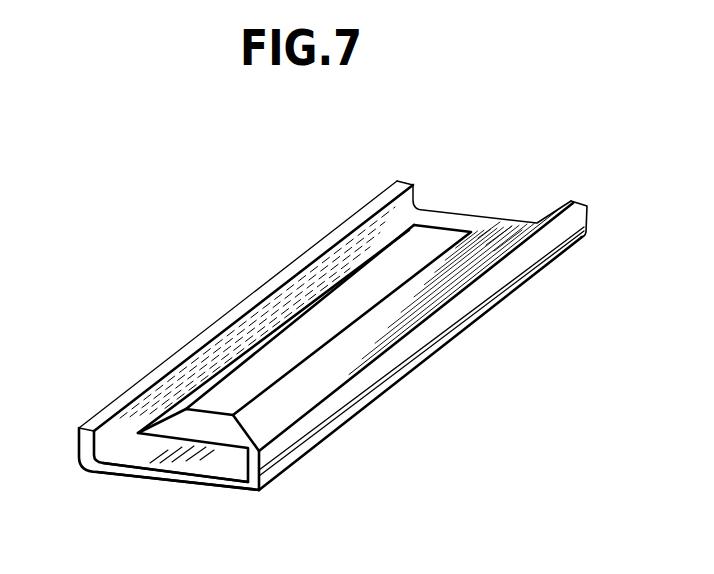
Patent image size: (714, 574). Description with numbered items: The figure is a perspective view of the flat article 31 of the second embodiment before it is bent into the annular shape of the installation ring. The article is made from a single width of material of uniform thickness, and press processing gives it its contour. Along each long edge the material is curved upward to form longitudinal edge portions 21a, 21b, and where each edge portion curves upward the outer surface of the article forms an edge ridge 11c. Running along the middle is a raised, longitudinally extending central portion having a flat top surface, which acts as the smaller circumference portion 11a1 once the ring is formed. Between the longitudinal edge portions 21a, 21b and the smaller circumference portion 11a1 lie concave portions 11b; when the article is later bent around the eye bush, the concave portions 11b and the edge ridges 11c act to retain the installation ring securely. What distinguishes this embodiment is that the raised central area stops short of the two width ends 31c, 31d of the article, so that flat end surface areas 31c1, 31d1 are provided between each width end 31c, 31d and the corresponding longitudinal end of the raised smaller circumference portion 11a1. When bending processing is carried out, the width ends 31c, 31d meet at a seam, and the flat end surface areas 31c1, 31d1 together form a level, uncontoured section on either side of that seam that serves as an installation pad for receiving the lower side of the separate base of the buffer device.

The installation ring 31 is at (545, 327).
The width end 31c is at (128, 472).
The flat end surface area 31c1 is at (218, 463).
The width end 31d is at (452, 212).
The flat end surface area 31d1 is at (512, 231).
The smaller circumference portion 11a1 is at (262, 370).
The concave portion 11b is at (168, 388).
The edge ridge 11c is at (347, 408).
The longitudinal edge portion 21a is at (91, 422).
The longitudinal edge portion 21b is at (407, 335).